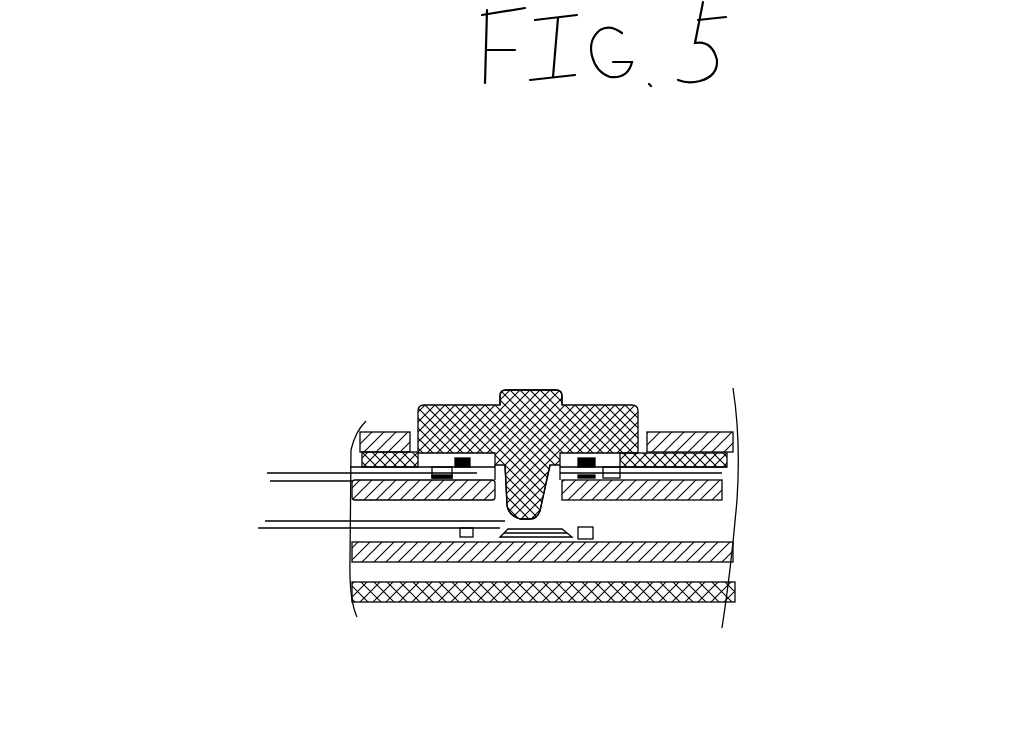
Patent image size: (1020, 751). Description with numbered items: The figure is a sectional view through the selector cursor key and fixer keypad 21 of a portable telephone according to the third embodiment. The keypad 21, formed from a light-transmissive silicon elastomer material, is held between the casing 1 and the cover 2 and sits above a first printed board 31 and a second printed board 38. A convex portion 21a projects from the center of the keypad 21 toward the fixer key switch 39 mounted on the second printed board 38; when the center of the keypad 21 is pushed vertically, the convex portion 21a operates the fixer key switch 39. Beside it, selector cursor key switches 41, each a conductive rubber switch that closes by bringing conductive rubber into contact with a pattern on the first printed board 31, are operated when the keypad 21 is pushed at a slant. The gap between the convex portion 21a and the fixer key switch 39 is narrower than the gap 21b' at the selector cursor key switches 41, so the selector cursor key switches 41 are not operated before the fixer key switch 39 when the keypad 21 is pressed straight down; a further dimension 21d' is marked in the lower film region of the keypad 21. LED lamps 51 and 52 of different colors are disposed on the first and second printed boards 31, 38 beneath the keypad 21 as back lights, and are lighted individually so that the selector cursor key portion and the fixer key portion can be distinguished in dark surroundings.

The casing 1 is at (435, 605).
The cover 2 is at (705, 427).
The selector cursor key and fixer keypad 21 is at (448, 404).
The convex portion 21a is at (497, 393).
The gap 21b' is at (335, 481).
The seal lower thin film portion 21d' is at (380, 536).
The first printed board 31 is at (358, 478).
The second printed board 38 is at (525, 543).
The fixer key switch 39 is at (540, 516).
The selector cursor key switch 41 is at (590, 462).
The LED lamp 51 is at (410, 433).
The LED lamp 52 is at (588, 540).